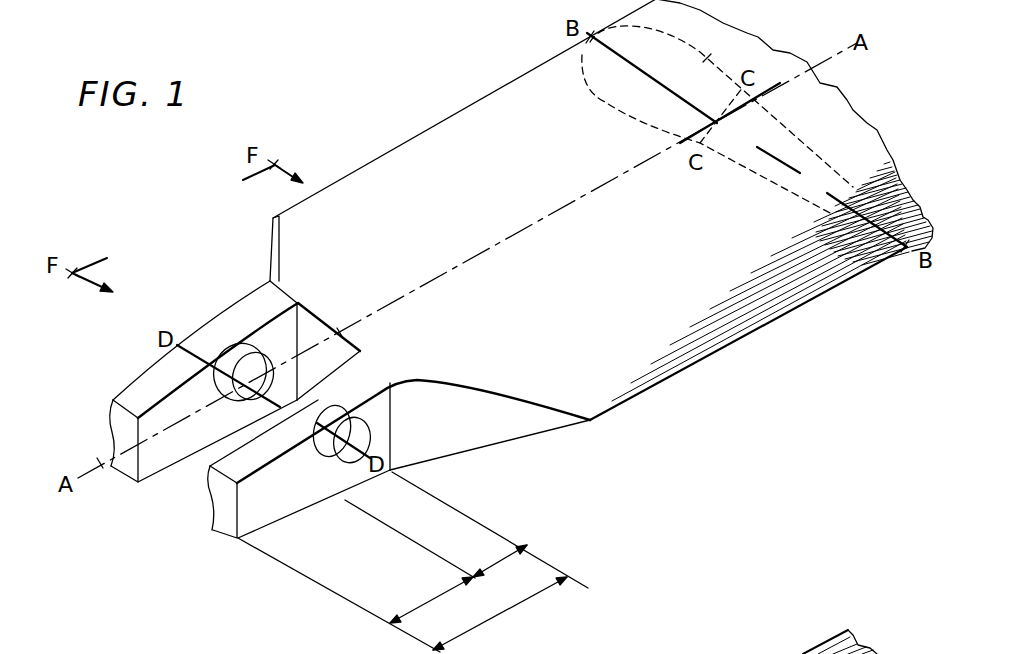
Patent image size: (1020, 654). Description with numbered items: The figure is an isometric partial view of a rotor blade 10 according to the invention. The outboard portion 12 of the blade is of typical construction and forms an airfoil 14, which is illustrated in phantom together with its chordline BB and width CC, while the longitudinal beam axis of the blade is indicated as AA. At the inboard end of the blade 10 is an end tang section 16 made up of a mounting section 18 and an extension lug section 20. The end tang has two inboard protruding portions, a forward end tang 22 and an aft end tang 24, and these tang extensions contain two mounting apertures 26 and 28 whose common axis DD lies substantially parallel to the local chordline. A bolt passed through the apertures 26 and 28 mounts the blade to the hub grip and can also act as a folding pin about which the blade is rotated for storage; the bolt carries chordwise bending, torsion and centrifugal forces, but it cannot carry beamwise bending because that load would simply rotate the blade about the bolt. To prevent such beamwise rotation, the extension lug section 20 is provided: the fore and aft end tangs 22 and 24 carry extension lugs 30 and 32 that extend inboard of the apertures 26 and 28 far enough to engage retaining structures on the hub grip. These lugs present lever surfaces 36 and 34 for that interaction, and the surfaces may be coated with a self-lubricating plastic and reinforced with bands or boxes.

The rotor blade 10 is at (418, 96).
The outboard portion 12 is at (596, 177).
The airfoil 14 is at (707, 58).
The end tang section 16 is at (500, 613).
The mounting section 18 is at (500, 562).
The extension lug section 20 is at (431, 600).
The forward end tang 22 is at (256, 291).
The aft end tang 24 is at (322, 486).
The mounting aperture 26 is at (238, 403).
The mounting aperture 28 is at (362, 468).
The extension lug 30 is at (142, 392).
The extension lug 32 is at (258, 520).
The lever surface 34 is at (211, 520).
The lever surface 36 is at (108, 428).